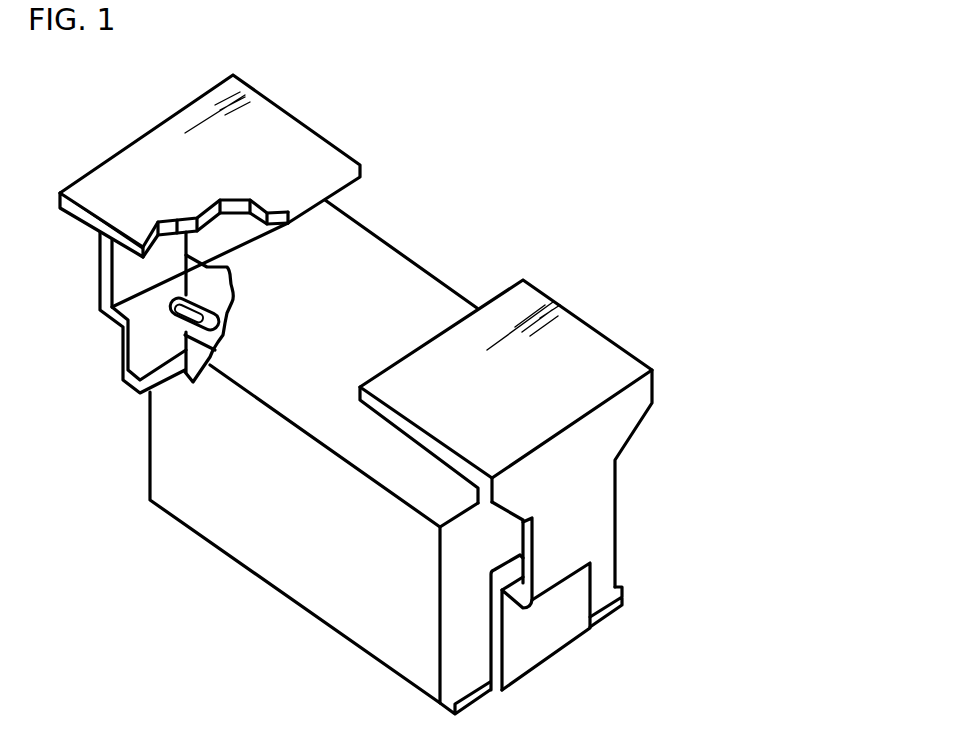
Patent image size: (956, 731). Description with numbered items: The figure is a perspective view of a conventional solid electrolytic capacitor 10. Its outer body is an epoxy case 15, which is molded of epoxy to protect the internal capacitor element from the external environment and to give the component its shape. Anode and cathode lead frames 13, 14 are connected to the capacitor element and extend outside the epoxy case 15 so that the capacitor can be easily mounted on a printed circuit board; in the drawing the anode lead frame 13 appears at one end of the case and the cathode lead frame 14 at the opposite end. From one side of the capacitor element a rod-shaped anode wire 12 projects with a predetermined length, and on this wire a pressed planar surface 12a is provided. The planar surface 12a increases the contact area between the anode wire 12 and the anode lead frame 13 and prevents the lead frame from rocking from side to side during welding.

The solid electrolytic capacitor 10 is at (484, 187).
The anode wire 12 is at (213, 345).
The planar surface 12a is at (186, 290).
The anode lead frame 13 is at (147, 313).
The cathode lead frame 14 is at (543, 633).
The epoxy case 15 is at (284, 553).